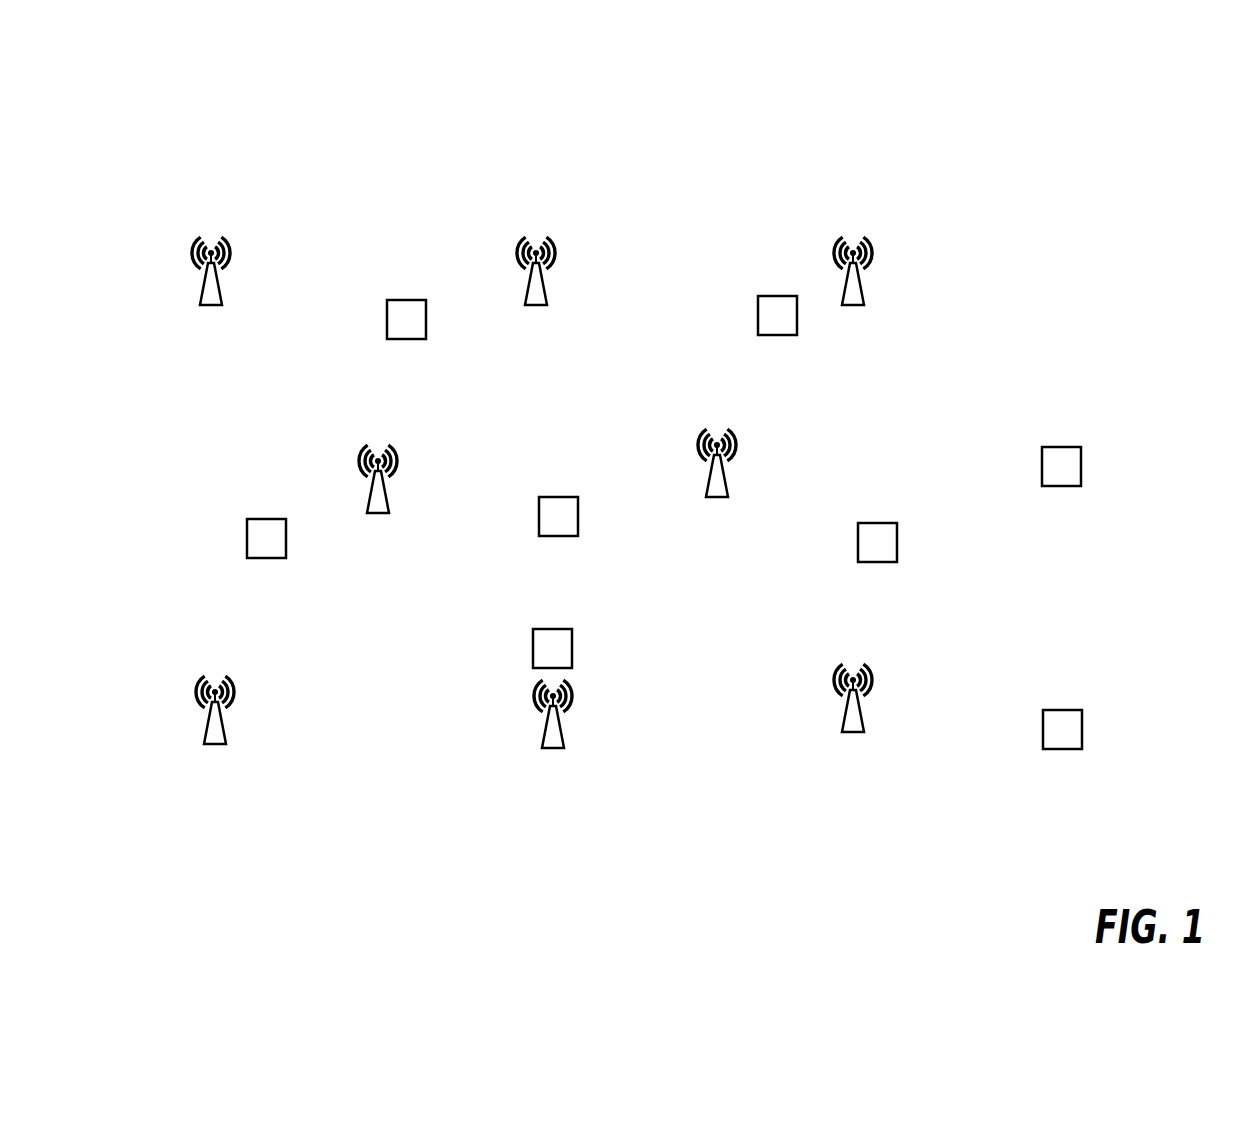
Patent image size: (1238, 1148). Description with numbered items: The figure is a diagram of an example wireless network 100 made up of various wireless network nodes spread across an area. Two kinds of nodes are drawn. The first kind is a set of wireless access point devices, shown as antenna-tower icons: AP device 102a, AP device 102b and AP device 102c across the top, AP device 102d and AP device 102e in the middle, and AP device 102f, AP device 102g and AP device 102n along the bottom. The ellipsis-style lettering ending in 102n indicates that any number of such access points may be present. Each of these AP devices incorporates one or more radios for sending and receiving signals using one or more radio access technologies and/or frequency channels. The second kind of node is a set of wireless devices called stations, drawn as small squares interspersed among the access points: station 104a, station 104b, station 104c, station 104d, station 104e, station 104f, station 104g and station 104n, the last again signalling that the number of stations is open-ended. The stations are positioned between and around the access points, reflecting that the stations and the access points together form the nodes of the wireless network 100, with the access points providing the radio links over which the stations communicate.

The wireless network 100 is at (1063, 140).
The wireless access point device 102a is at (232, 248).
The wireless access point device 102b is at (558, 248).
The wireless access point device 102c is at (874, 248).
The wireless access point device 102d is at (398, 458).
The wireless access point device 102e is at (738, 438).
The wireless access point device 102f is at (237, 687).
The wireless access point device 102g is at (575, 692).
The wireless access point device 102n is at (873, 676).
The station 104a is at (265, 519).
The station 104b is at (557, 497).
The station 104c is at (1060, 447).
The station 104d is at (775, 296).
The station 104e is at (405, 300).
The station 104f is at (551, 629).
The station 104g is at (1061, 710).
The station 104n is at (876, 523).